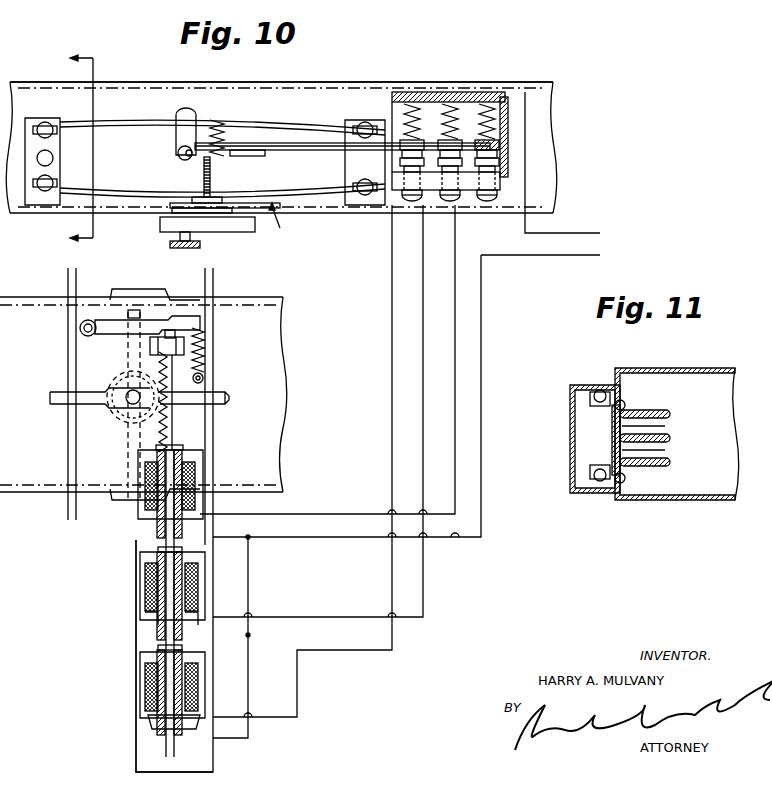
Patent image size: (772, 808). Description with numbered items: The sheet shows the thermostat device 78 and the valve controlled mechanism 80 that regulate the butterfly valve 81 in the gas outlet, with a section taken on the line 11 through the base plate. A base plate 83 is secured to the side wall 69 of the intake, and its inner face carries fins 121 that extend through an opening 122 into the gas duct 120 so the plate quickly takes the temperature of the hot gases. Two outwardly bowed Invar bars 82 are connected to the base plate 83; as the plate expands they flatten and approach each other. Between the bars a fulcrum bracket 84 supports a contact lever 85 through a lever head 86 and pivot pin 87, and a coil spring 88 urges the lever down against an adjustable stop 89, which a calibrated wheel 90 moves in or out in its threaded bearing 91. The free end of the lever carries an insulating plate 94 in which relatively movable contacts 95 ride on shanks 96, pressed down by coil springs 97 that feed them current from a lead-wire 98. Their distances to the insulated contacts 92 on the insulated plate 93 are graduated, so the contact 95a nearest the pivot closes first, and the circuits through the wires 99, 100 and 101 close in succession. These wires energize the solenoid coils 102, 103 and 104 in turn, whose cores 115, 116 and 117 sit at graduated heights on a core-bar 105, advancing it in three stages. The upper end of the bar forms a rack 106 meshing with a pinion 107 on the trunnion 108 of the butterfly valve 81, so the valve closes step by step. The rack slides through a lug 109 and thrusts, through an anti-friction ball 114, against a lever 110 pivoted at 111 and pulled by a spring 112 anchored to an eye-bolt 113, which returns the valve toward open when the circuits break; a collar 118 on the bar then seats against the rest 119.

In FIG. 10, the section line 11 is at (69, 149).
In FIG. 10, the side wall 69 is at (360, 90).
In FIG. 11, the side wall 69 is at (626, 388).
In FIG. 10, the thermostat device 78 is at (283, 221).
In FIG. 10, the valve controlled mechanism 80 is at (138, 540).
In FIG. 10, the butterfly valve 81 is at (139, 411).
In FIG. 10, the Invar bars 82 is at (305, 110).
In FIG. 10, the base plate 83 is at (105, 120).
In FIG. 11, the base plate 83 is at (612, 430).
In FIG. 10, the fulcrum bracket 84 is at (176, 138).
In FIG. 10, the contact lever 85 is at (292, 151).
In FIG. 10, the lever head 86 is at (246, 156).
In FIG. 10, the pivot pin 87 is at (178, 155).
In FIG. 10, the coil spring 88 is at (226, 137).
In FIG. 10, the adjustable stop 89 is at (211, 178).
In FIG. 10, the calibrated wheel 90 is at (236, 223).
In FIG. 10, the threaded bearing 91 is at (200, 198).
In FIG. 10, the insulated contacts 92 is at (494, 170).
In FIG. 10, the insulated plate 93 is at (500, 184).
In FIG. 10, the insulating plate 94 is at (494, 138).
In FIG. 10, the relatively movable contacts 95 is at (494, 152).
In FIG. 10, the contact 95a is at (400, 166).
In FIG. 10, the shanks 96 is at (501, 108).
In FIG. 10, the coil springs 97 is at (479, 97).
In FIG. 10, the lead-wire 98 is at (440, 96).
In FIG. 10, the circuit wire 99 is at (391, 272).
In FIG. 10, the circuit wire 100 is at (422, 274).
In FIG. 10, the circuit wire 101 is at (456, 258).
In FIG. 10, the solenoid coil 102 is at (150, 673).
In FIG. 10, the solenoid coil 103 is at (146, 586).
In FIG. 10, the solenoid coil 104 is at (143, 486).
In FIG. 10, the core-bar 105 is at (173, 600).
In FIG. 10, the rack 106 is at (173, 428).
In FIG. 10, the pinion 107 is at (160, 402).
In FIG. 10, the trunnion 108 is at (130, 394).
In FIG. 10, the lug 109 is at (150, 348).
In FIG. 10, the lever 110 is at (167, 318).
In FIG. 10, the pivot 111 is at (93, 321).
In FIG. 10, the spring 112 is at (206, 345).
In FIG. 10, the eye-bolt 113 is at (203, 375).
In FIG. 10, the anti-friction ball 114 is at (173, 331).
In FIG. 10, the solenoid core 115 is at (184, 683).
In FIG. 10, the solenoid core 116 is at (158, 622).
In FIG. 10, the solenoid core 117 is at (182, 528).
In FIG. 10, the collar 118 is at (179, 448).
In FIG. 10, the rest 119 is at (202, 456).
In FIG. 11, the gas duct 120 is at (705, 386).
In FIG. 11, the fins 121 is at (648, 411).
In FIG. 11, the opening 122 is at (626, 453).